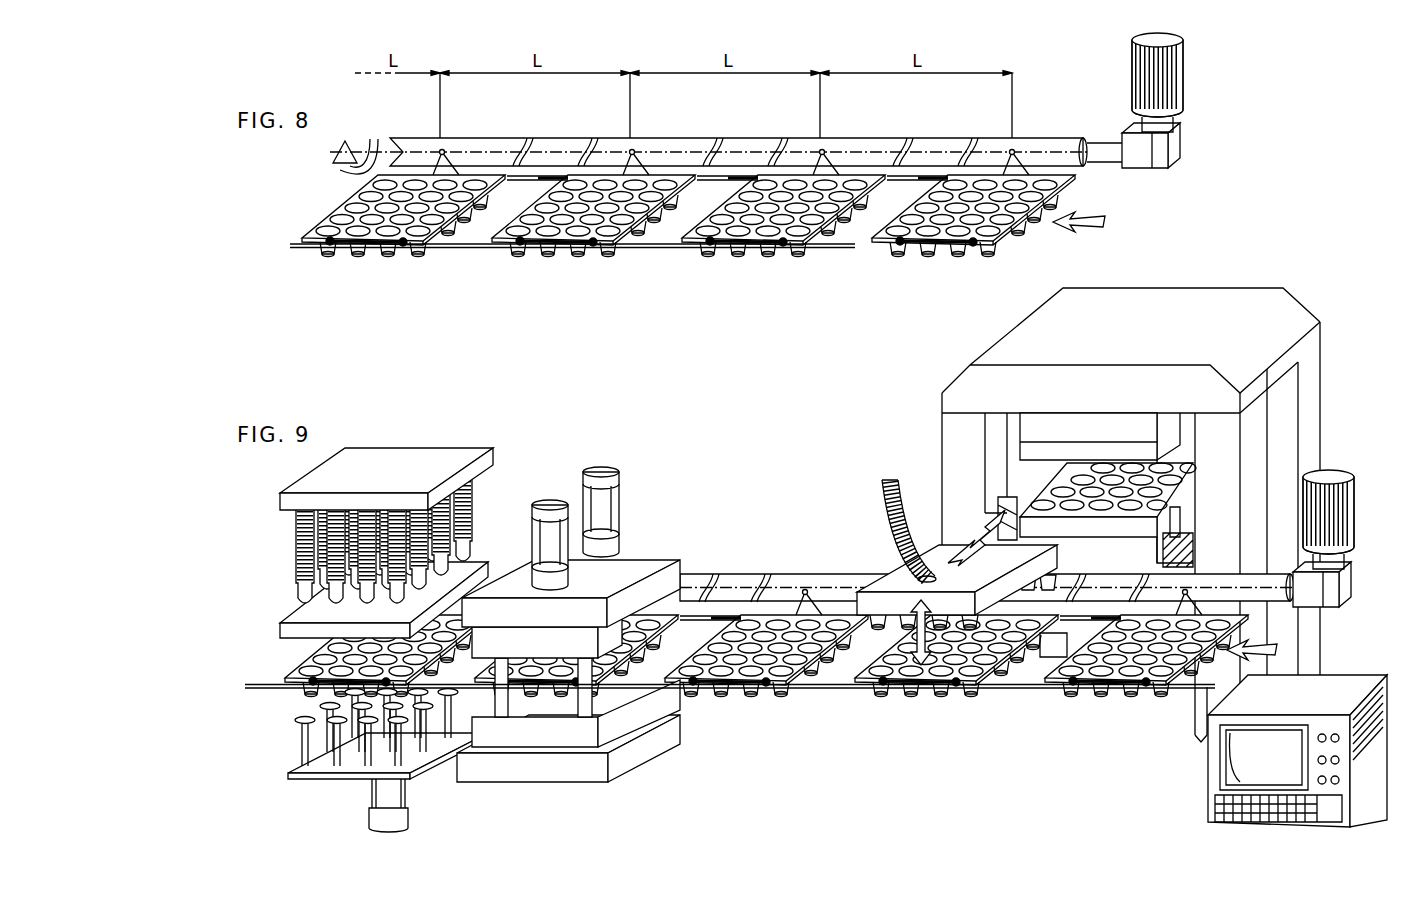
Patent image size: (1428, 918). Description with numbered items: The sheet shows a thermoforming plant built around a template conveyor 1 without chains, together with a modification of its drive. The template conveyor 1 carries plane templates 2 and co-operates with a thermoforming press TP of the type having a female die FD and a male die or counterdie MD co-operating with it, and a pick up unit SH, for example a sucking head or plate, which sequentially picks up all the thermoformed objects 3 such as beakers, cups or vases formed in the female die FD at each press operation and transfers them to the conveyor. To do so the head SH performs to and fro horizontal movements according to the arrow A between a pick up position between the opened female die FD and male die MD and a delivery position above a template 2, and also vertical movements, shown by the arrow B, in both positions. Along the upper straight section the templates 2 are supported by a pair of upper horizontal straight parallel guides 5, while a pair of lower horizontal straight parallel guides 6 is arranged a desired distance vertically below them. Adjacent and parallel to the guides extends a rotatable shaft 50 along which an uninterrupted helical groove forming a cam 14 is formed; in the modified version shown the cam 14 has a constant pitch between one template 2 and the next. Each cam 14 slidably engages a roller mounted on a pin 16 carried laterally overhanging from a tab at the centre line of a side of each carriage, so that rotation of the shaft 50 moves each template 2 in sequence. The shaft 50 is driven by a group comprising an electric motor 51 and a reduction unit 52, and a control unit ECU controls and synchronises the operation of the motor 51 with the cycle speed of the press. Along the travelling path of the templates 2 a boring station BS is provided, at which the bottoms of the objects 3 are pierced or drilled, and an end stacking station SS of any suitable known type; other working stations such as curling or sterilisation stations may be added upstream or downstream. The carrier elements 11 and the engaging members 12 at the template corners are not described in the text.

In FIG. 9, the template conveyor 1 is at (1003, 700).
In FIG. 8, the template 2 is at (671, 243).
In FIG. 9, the template 2 is at (288, 667).
In FIG. 8, the thermoformed objects 3 is at (950, 253).
In FIG. 9, the thermoformed objects 3 is at (773, 695).
In FIG. 8, the upper horizontal straight parallel guides 5 is at (520, 183).
In FIG. 9, the upper horizontal straight parallel guides 5 is at (698, 623).
In FIG. 8, the lower horizontal straight parallel guides 6 is at (730, 173).
In FIG. 8, the carrier plate 11 is at (878, 237).
In FIG. 8, the engaging pins 12 is at (900, 247).
In FIG. 9, the engaging pins 12 is at (729, 681).
In FIG. 8, the helical groove (cam) 14 is at (584, 146).
In FIG. 9, the helical groove (cam) 14 is at (758, 575).
In FIG. 8, the pin 16 is at (447, 150).
In FIG. 9, the pin 16 is at (810, 585).
In FIG. 8, the shaft 50 is at (677, 145).
In FIG. 9, the shaft 50 is at (788, 580).
In FIG. 8, the electric motor 51 is at (1183, 92).
In FIG. 9, the electric motor 51 is at (1345, 513).
In FIG. 8, the reduction unit 52 is at (1172, 145).
In FIG. 9, the reduction unit 52 is at (1343, 575).
In FIG. 9, the end stacking station SS is at (421, 444).
In FIG. 9, the boring station BS is at (653, 522).
In FIG. 9, the pick up unit (sucking head or plate) SH is at (905, 575).
In FIG. 9, the arrow A (horizontal movement) A is at (990, 517).
In FIG. 9, the arrow B (vertical movement) B is at (913, 663).
In FIG. 9, the thermoforming press TP is at (1177, 284).
In FIG. 9, the male die (counterdie) MD is at (1165, 443).
In FIG. 9, the female die FD is at (1127, 530).
In FIG. 9, the control unit ECU is at (1207, 773).